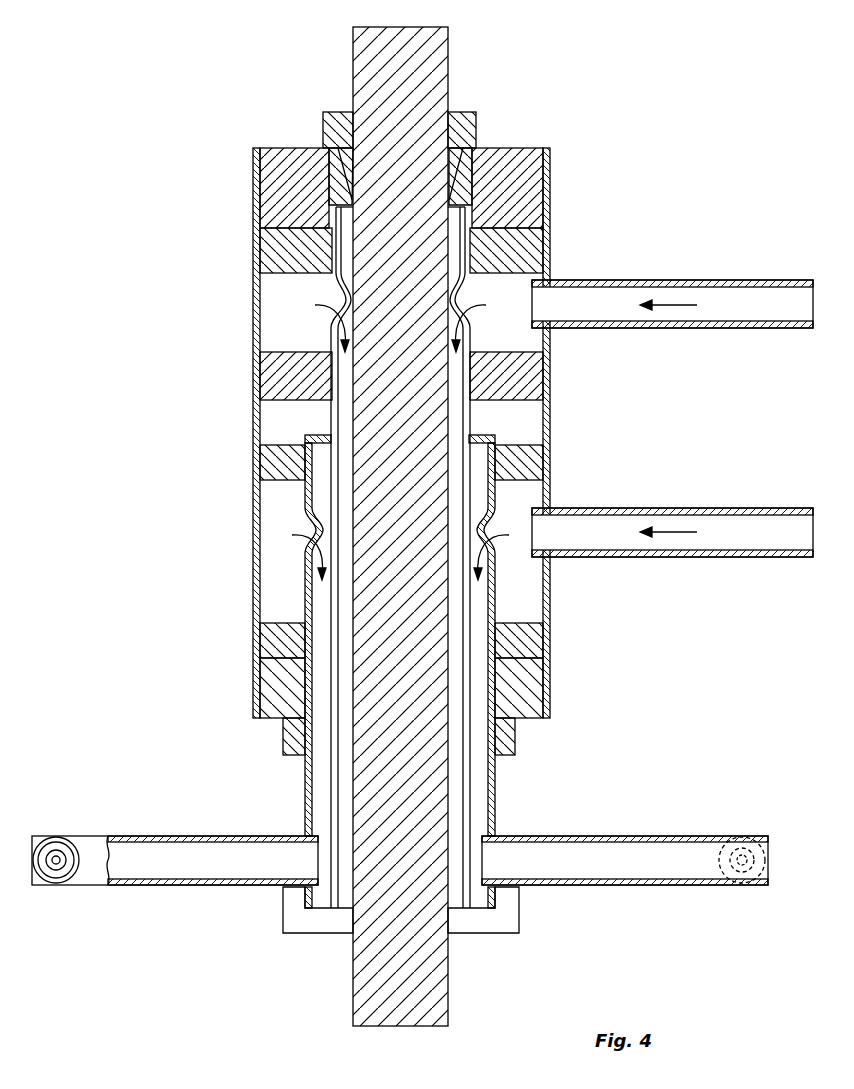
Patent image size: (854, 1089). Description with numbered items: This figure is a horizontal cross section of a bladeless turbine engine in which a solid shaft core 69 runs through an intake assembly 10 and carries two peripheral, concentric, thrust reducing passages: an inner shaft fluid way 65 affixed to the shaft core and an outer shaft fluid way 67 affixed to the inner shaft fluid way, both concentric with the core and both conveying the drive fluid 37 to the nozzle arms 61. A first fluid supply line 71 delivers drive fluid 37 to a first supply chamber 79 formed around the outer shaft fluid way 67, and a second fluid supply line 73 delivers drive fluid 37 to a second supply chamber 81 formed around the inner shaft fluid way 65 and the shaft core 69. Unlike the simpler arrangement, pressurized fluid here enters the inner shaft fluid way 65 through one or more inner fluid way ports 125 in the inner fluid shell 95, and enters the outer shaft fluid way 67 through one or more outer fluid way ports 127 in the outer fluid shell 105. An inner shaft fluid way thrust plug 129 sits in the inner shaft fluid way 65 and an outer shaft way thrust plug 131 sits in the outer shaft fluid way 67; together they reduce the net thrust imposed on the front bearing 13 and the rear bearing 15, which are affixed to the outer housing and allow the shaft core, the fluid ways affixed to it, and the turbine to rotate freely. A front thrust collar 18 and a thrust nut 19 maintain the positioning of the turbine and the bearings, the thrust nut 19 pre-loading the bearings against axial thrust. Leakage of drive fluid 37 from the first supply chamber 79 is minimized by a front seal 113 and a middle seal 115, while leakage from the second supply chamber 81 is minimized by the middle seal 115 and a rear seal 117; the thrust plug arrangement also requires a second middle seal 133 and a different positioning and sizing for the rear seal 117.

The solid shaft core 69 is at (387, 80).
The thrust nut 19 is at (467, 110).
The rear bearing 15 is at (473, 148).
The inner shaft fluid way thrust plug 129 is at (453, 203).
The rear seal 117 is at (277, 258).
The inner fluid way ports 125 is at (455, 300).
The drive fluid 37 is at (670, 305).
The inner fluid shell 95 is at (333, 338).
The middle seal 115 is at (277, 375).
The second supply chamber 81 is at (523, 338).
The second fluid supply line 73 is at (713, 328).
The outer shaft way thrust plug 131 is at (487, 432).
The outer fluid way ports 127 is at (487, 520).
The second middle seal 133 is at (267, 460).
The first supply chamber 79 is at (527, 568).
The first fluid supply line 71 is at (672, 557).
The front seal 113 is at (260, 635).
The outer fluid shell 105 is at (510, 600).
The intake assembly 10 is at (547, 643).
The outer shaft fluid way 67 is at (322, 682).
The inner shaft fluid way 65 is at (342, 702).
The front bearing 13 is at (520, 705).
The front thrust collar 18 is at (507, 757).
The nozzle arms 61 is at (600, 885).